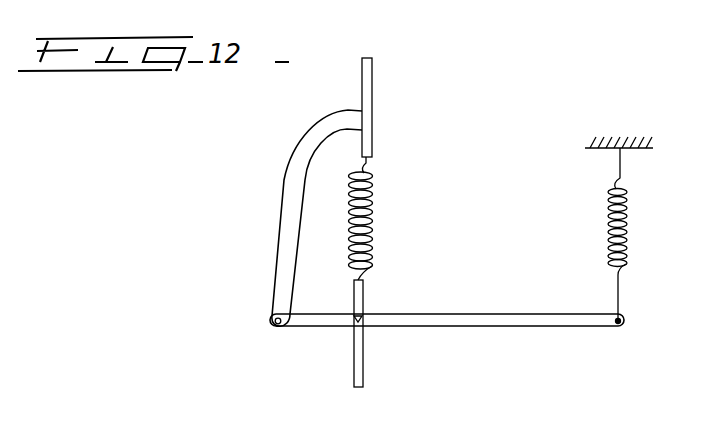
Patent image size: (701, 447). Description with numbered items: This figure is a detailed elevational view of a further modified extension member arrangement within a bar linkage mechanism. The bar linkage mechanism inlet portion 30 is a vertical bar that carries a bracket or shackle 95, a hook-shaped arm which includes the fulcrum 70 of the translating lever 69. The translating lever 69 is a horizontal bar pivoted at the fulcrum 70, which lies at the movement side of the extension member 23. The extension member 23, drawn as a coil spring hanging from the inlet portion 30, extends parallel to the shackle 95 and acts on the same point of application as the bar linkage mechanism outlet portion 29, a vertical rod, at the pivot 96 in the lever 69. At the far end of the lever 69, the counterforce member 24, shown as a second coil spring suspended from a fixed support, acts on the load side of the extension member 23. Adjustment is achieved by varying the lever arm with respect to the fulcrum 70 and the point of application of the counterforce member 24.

The bar linkage mechanism inlet portion 30 is at (373, 79).
The bracket or shackle 95 is at (288, 190).
The extension member 23 is at (373, 229).
The counterforce member 24 is at (627, 237).
The translating lever 69 is at (520, 328).
The fulcrum 70 is at (272, 327).
The bar linkage mechanism outlet portion 29 is at (364, 355).
The pivot 96 is at (363, 315).